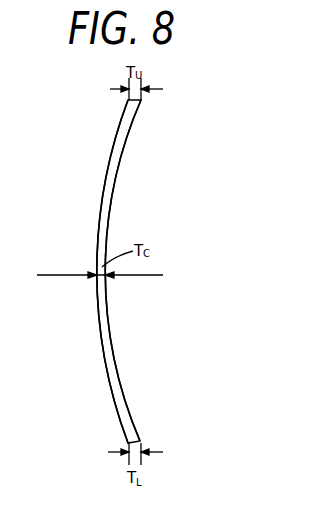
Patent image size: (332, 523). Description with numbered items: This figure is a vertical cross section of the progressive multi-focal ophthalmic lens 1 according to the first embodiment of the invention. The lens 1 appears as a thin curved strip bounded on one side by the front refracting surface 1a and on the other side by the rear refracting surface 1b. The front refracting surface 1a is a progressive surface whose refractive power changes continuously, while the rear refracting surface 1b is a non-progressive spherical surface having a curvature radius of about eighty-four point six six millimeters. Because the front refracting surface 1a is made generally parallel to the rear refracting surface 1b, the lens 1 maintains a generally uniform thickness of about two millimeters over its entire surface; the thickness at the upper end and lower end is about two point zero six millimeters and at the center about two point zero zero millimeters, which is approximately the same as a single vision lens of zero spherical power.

The progressive multi-focal ophthalmic lens 1 is at (143, 398).
The front refracting surface 1a is at (100, 350).
The rear refracting surface 1b is at (112, 348).